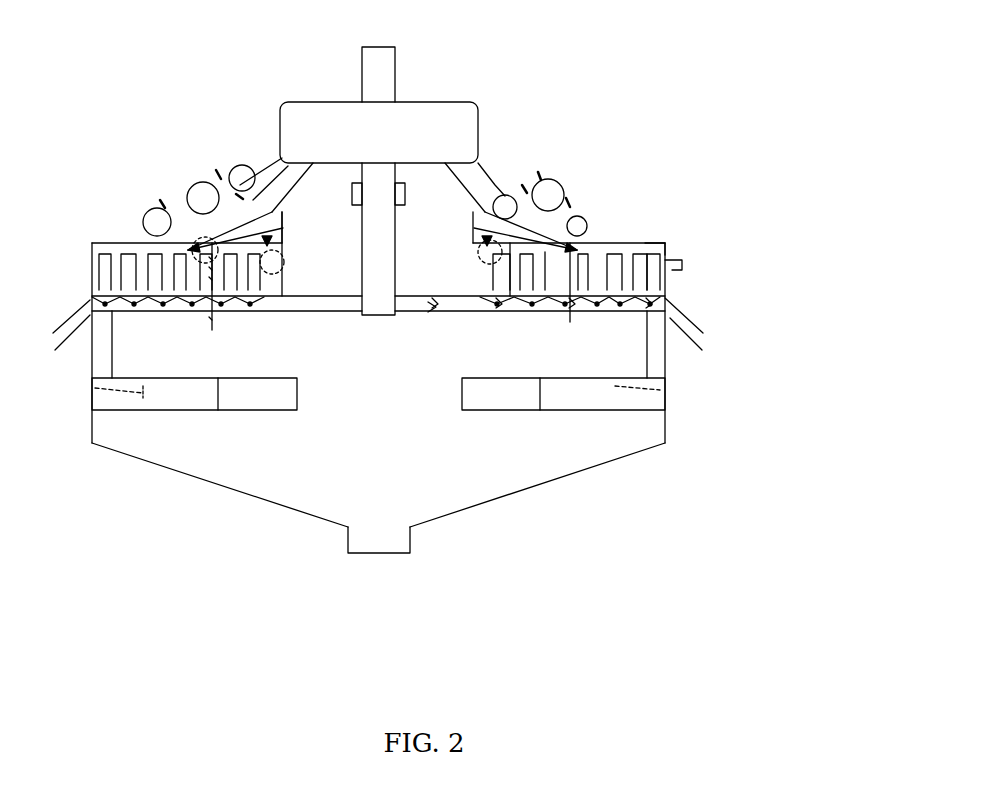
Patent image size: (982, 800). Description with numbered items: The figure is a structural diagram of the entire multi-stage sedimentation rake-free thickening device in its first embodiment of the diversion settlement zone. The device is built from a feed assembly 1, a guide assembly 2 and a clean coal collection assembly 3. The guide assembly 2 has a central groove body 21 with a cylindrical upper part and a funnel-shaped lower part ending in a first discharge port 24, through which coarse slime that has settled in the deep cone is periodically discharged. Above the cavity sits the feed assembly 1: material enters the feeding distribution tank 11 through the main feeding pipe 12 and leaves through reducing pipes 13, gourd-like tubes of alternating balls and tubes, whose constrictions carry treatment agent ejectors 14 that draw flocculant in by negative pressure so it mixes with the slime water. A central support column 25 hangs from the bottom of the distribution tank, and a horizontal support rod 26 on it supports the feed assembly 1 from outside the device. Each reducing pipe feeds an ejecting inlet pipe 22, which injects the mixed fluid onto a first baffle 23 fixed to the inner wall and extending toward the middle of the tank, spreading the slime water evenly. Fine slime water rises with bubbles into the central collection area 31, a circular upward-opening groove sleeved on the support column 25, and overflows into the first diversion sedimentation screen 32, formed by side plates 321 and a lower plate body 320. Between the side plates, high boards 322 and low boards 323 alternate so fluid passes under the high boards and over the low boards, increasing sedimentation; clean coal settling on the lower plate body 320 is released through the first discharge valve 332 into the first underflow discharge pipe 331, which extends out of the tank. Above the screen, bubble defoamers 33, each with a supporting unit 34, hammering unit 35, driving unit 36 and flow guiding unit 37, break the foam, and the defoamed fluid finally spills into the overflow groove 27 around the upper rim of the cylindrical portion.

The feed assembly 1 is at (528, 25).
The feeding distribution tank 11 is at (457, 118).
The main feeding pipe 12 is at (392, 65).
The reducing pipe 13 is at (512, 177).
The treatment agent ejector 14 is at (215, 172).
The guide assembly 2 is at (310, 453).
The central groove body 21 is at (513, 493).
The ejecting inlet pipe 22 is at (103, 365).
The first baffle 23 is at (250, 411).
The first discharge port 24 is at (373, 542).
The central support column 25 is at (368, 222).
The horizontal support rod 26 is at (485, 217).
The overflow groove 27 is at (673, 262).
The clean coal collection assembly 3 is at (503, 437).
The central collection area 31 is at (303, 283).
The first diversion sedimentation screen 32 is at (777, 212).
The lower plate body 320 is at (667, 288).
The side plate 321 is at (658, 243).
The high board 322 is at (573, 305).
The low board 323 is at (650, 300).
The bubble defoamer 33 is at (612, 380).
The first underflow discharge pipe 331 is at (437, 306).
The first discharge valve 332 is at (500, 306).
The supporting unit 34 is at (647, 373).
The hammering unit 35 is at (378, 425).
The driving unit 36 is at (485, 217).
The flow guiding unit 37 is at (370, 410).